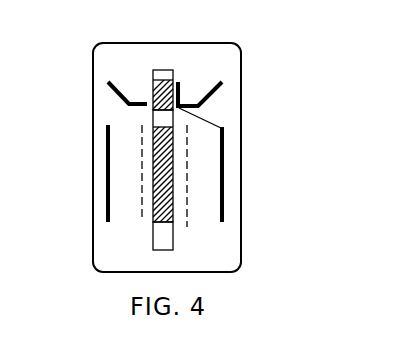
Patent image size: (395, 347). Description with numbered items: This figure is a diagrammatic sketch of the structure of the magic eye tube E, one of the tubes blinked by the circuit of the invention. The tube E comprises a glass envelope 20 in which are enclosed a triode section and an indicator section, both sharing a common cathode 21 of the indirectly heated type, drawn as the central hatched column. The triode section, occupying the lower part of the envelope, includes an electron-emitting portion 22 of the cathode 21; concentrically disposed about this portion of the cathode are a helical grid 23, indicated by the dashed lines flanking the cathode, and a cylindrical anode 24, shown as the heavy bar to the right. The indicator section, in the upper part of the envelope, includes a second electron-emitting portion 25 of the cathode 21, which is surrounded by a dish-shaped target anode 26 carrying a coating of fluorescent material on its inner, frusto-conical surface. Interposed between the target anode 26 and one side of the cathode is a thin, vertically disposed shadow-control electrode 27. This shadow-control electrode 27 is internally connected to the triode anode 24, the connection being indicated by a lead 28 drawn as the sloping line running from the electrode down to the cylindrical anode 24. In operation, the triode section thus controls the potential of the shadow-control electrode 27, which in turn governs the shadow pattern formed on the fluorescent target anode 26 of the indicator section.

The glass envelope 20 is at (93, 78).
The common cathode 21 is at (174, 244).
The electron-emitting portion of the cathode 22 is at (156, 215).
The helical grid 23 is at (188, 207).
The cylindrical anode 24 is at (224, 170).
The second electron-emitting portion of the cathode 25 is at (153, 93).
The dish-shaped target anode 26 is at (218, 93).
The shadow-control electrode 27 is at (177, 94).
The lead 28 is at (205, 120).
The tube E is at (86, 187).